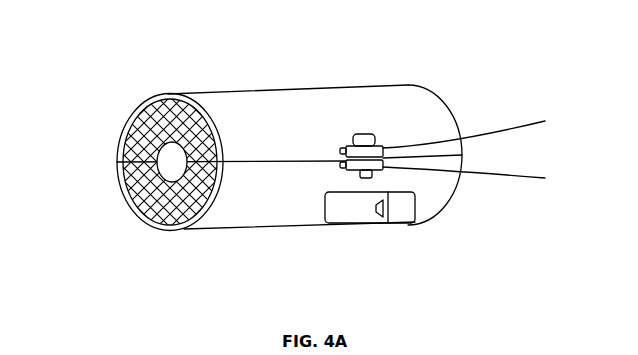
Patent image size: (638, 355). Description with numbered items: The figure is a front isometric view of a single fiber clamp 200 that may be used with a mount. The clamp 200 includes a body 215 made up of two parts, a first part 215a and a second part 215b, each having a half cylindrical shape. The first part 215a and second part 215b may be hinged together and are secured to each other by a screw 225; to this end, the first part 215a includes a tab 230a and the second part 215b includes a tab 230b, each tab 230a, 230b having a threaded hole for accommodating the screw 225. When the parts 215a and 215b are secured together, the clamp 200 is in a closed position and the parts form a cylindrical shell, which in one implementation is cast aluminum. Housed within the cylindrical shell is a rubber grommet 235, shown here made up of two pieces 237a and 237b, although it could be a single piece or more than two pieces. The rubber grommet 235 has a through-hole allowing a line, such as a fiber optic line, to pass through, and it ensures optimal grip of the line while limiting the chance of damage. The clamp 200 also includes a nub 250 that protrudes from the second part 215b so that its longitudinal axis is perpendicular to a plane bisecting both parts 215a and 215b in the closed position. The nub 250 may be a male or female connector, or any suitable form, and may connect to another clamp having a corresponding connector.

The single fiber clamp 200 is at (290, 213).
The body 215 is at (368, 70).
The first part 215a is at (450, 108).
The second part 215b is at (452, 198).
The screw 225 is at (363, 130).
The tab 230a is at (463, 135).
The tab 230b is at (464, 174).
The rubber grommet 235 is at (177, 108).
The piece 237a is at (122, 131).
The piece 237b is at (132, 212).
The nub 250 is at (335, 207).